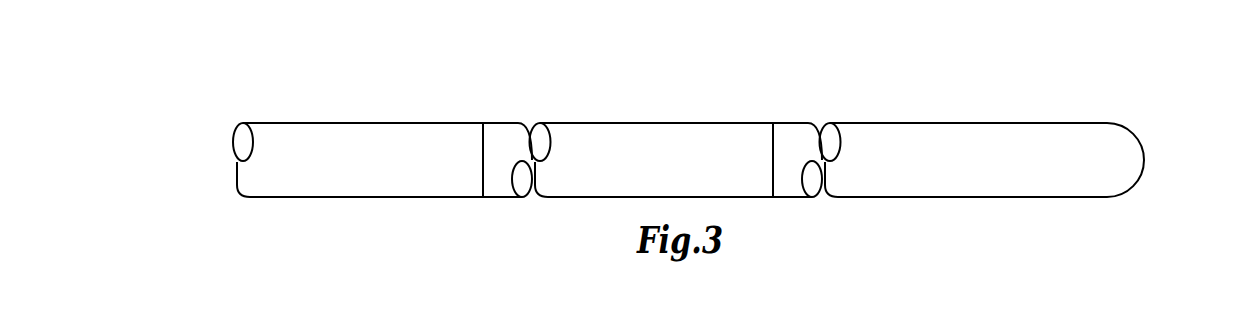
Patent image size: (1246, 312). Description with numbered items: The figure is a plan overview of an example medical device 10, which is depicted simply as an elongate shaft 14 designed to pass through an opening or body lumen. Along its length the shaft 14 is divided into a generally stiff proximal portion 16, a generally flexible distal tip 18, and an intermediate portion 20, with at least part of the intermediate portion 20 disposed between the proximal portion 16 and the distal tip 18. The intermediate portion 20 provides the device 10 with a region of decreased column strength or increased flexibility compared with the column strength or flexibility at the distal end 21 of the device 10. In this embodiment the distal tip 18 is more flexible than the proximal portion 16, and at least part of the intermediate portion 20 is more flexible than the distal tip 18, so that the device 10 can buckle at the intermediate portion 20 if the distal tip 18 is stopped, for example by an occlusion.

The medical device 10 is at (447, 80).
The elongate shaft 14 is at (378, 120).
The proximal portion 16 is at (287, 152).
The intermediate portion 20 is at (685, 122).
The distal tip portion 18 is at (990, 152).
The distal end 21 is at (1142, 163).